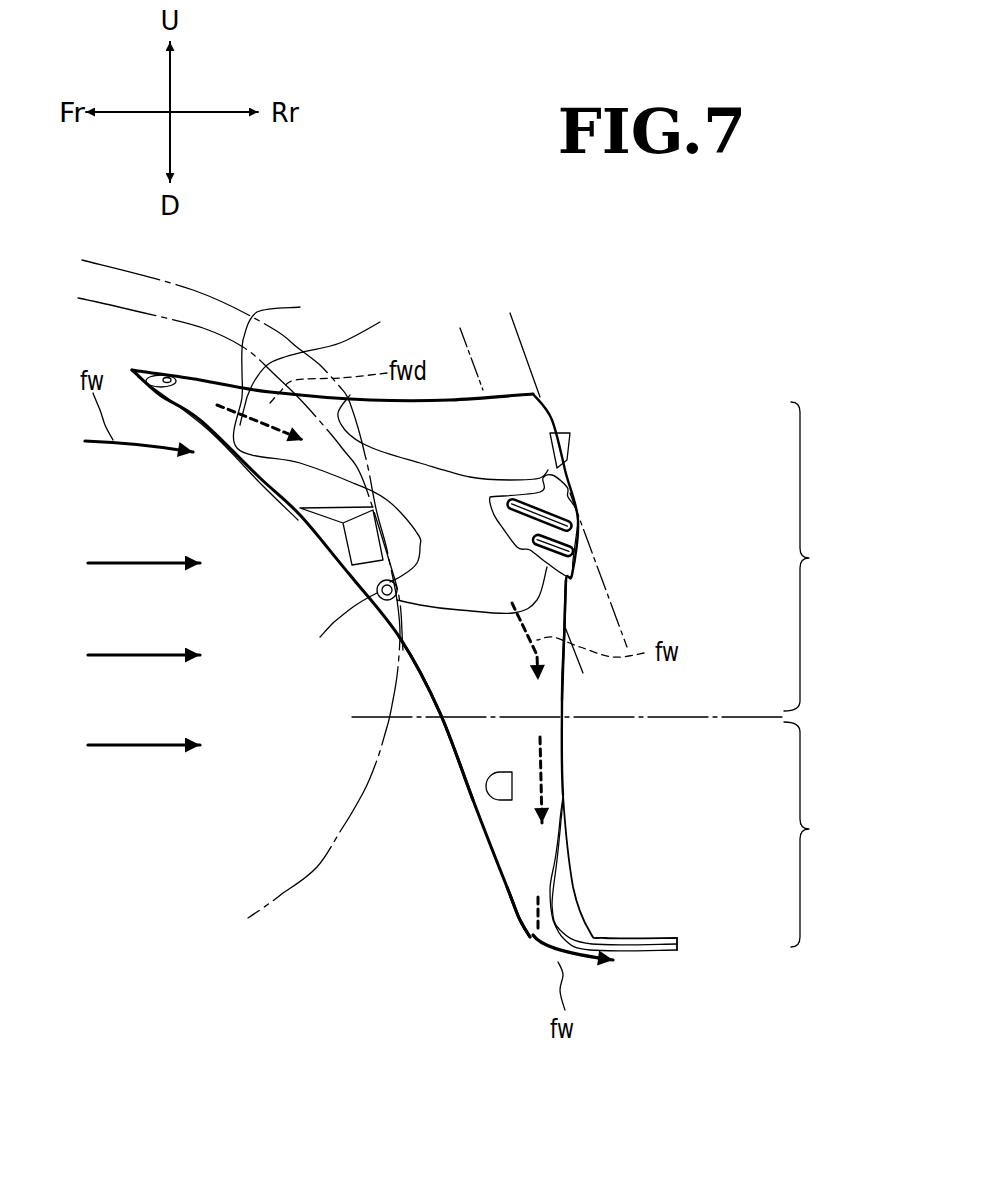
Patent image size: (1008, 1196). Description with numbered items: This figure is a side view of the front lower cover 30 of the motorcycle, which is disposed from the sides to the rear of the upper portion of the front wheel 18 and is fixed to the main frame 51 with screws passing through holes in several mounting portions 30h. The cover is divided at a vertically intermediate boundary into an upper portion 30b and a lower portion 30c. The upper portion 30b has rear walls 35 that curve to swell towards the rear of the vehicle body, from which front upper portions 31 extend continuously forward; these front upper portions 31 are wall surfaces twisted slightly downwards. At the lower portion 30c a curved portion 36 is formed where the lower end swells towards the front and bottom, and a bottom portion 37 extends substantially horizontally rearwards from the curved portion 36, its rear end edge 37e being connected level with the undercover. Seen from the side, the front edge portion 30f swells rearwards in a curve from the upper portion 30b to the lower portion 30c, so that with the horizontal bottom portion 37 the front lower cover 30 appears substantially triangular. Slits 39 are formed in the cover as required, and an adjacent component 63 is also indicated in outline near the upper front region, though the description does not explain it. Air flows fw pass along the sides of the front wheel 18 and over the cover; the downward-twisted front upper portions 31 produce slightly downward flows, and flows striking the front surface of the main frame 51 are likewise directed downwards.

The front wheel 18 is at (350, 813).
The front lower cover 30 is at (572, 405).
The upper portion 30b is at (822, 556).
The lower portion 30c is at (822, 834).
The front edge portion 30f is at (440, 717).
The mounting portion 30h is at (167, 378).
The front upper portion 31 is at (360, 335).
The rear wall 35 is at (567, 612).
The curved portion 36 is at (528, 933).
The bottom portion 37 is at (630, 938).
The rear end edge 37e is at (678, 945).
The slit 39 is at (575, 513).
The main frame 51 is at (527, 340).
The garnish 63 is at (300, 307).